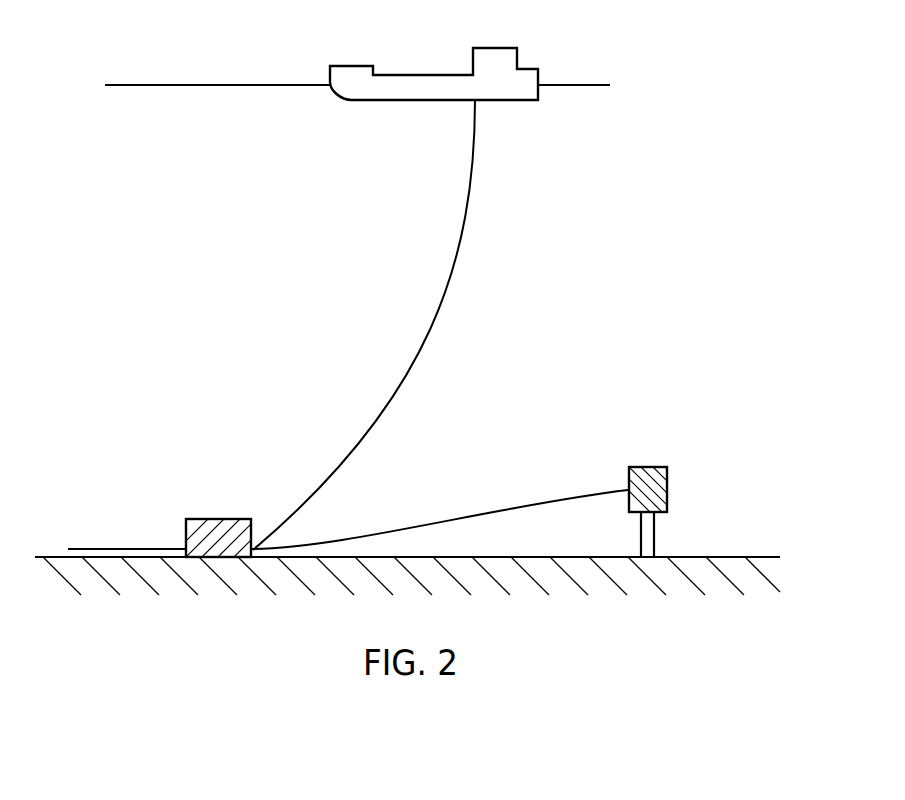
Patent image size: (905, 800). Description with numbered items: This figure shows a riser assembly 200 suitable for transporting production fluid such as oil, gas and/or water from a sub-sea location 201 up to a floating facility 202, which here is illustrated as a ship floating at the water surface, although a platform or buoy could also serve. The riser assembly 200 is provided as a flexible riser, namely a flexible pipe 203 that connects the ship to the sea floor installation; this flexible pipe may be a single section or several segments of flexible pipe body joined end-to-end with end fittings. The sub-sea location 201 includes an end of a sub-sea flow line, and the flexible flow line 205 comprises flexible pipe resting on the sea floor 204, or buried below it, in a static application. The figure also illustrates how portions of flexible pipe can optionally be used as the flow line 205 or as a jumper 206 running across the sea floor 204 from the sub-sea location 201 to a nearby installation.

The riser assembly 200 is at (493, 177).
The sub-sea location 201 is at (223, 519).
The floating facility 202 is at (352, 66).
The flexible pipe 203 is at (413, 381).
The sea floor 204 is at (722, 557).
The flexible flow line 205 is at (130, 549).
The jumper 206 is at (563, 494).